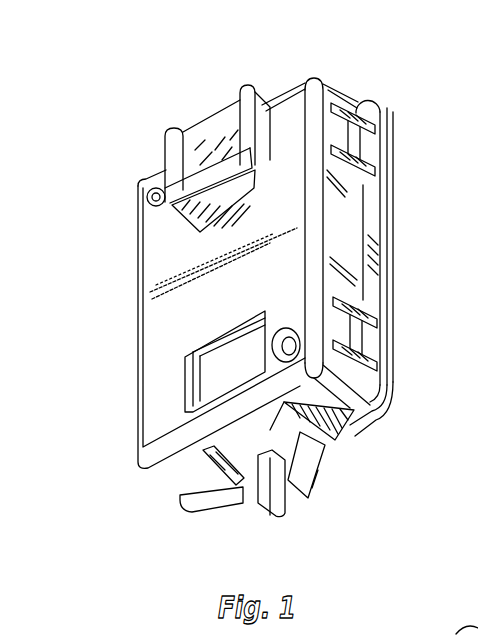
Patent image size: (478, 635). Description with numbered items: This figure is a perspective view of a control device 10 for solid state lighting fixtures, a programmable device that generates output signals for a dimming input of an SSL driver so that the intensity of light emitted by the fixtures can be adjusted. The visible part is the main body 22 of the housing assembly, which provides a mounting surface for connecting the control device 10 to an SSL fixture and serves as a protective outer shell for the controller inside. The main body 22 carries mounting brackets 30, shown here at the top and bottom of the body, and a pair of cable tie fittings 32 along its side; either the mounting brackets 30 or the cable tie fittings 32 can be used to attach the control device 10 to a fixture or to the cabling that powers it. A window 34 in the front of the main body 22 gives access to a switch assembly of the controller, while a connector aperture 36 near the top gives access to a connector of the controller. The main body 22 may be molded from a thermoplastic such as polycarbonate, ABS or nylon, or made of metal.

The control device 10 is at (112, 107).
The main body 22 is at (132, 252).
The mounting brackets 30 is at (312, 470).
The cable tie fittings 32 is at (378, 139).
The window 34 is at (223, 370).
The connector aperture 36 is at (208, 127).